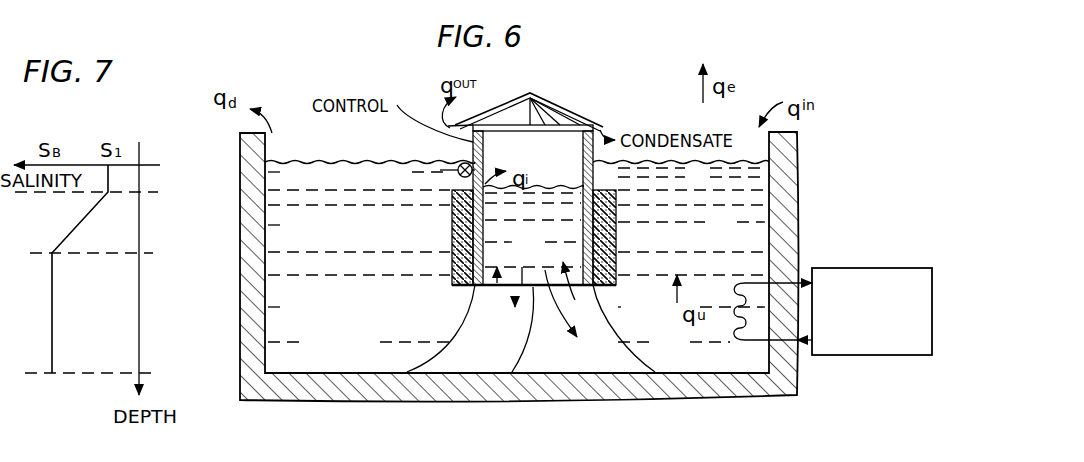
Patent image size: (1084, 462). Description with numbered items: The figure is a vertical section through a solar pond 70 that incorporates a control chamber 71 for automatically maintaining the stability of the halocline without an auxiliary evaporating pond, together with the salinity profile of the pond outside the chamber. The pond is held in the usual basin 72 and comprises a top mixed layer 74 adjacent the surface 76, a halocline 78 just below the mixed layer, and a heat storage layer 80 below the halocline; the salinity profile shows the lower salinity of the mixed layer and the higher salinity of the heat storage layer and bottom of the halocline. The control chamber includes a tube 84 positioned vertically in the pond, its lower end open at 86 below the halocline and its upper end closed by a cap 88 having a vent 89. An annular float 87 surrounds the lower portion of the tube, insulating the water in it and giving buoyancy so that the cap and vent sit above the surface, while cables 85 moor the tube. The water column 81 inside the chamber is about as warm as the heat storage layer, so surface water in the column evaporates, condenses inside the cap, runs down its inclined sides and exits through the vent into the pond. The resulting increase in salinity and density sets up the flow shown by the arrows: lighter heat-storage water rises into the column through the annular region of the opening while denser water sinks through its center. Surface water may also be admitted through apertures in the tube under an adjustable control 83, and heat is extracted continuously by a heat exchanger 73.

The solar pond 70 is at (582, 81).
The control chamber 71 is at (458, 166).
The basin 72 is at (790, 212).
The heat exchanger 73 is at (875, 277).
The top mixed layer 74 is at (707, 187).
The surface 76 is at (297, 160).
The halocline 78 is at (732, 235).
The heat storage layer 80 is at (672, 307).
The water column 81 is at (538, 243).
The adjustable control 83 is at (485, 152).
The tube 84 is at (593, 177).
The cables 85 is at (635, 353).
The open lower end 86 is at (502, 288).
The floats 87 is at (453, 231).
The cap 88 is at (505, 98).
The vent 89 is at (502, 108).